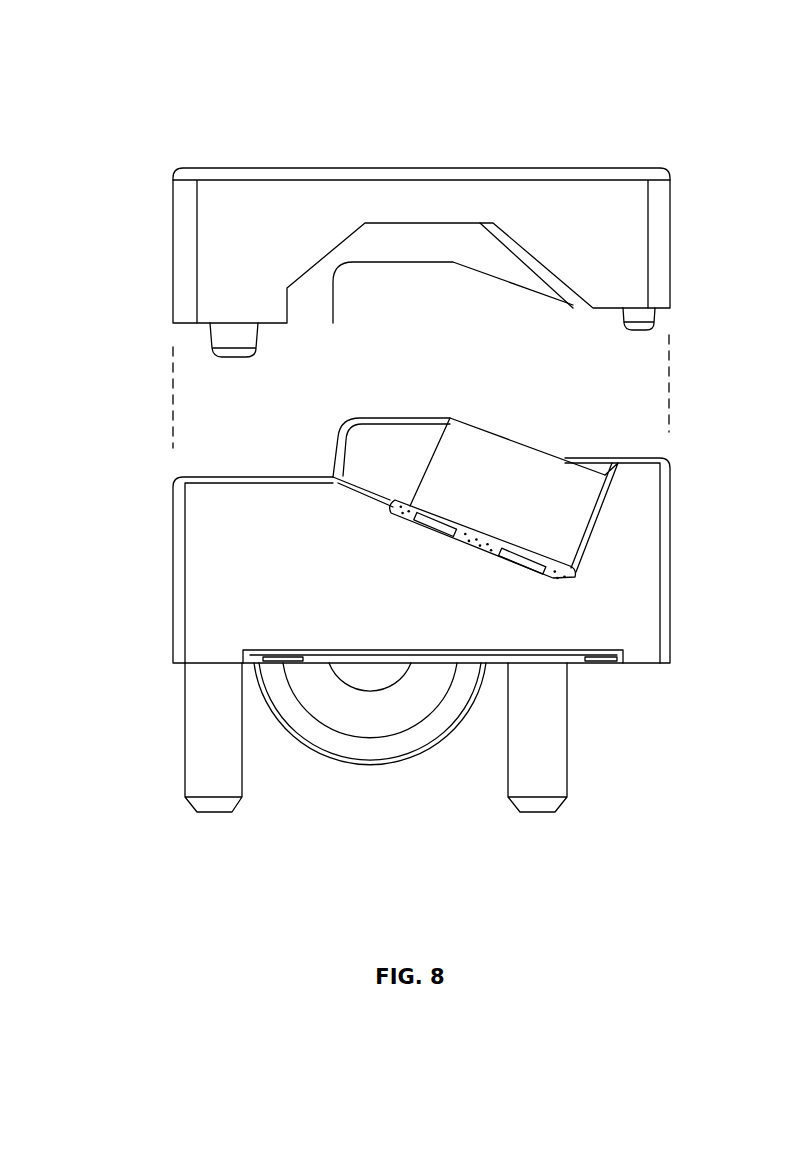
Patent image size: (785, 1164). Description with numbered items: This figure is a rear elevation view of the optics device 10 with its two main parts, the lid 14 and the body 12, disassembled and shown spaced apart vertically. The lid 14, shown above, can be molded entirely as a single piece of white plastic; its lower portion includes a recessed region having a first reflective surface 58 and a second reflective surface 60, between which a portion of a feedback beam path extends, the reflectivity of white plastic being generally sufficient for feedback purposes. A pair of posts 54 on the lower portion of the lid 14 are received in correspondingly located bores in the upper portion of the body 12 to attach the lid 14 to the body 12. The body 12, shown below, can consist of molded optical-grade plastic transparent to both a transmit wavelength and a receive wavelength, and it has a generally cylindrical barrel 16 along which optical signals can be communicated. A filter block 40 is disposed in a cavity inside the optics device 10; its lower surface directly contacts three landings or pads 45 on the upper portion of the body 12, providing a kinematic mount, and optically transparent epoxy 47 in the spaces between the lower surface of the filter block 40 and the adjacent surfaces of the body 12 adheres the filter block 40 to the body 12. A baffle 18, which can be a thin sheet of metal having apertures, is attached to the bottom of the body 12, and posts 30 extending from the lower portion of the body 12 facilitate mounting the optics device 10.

The optics device 10 is at (64, 68).
The body 12 is at (670, 503).
The lid 14 is at (556, 167).
The barrel 16 is at (343, 755).
The baffle 18 is at (498, 655).
The posts 30 is at (185, 758).
The filter block 40 is at (419, 504).
The pads 45 is at (428, 520).
The optically transparent epoxy 47 is at (485, 538).
The posts 54 is at (242, 358).
The first reflective surface 58 is at (530, 263).
The second reflective surface 60 is at (315, 262).